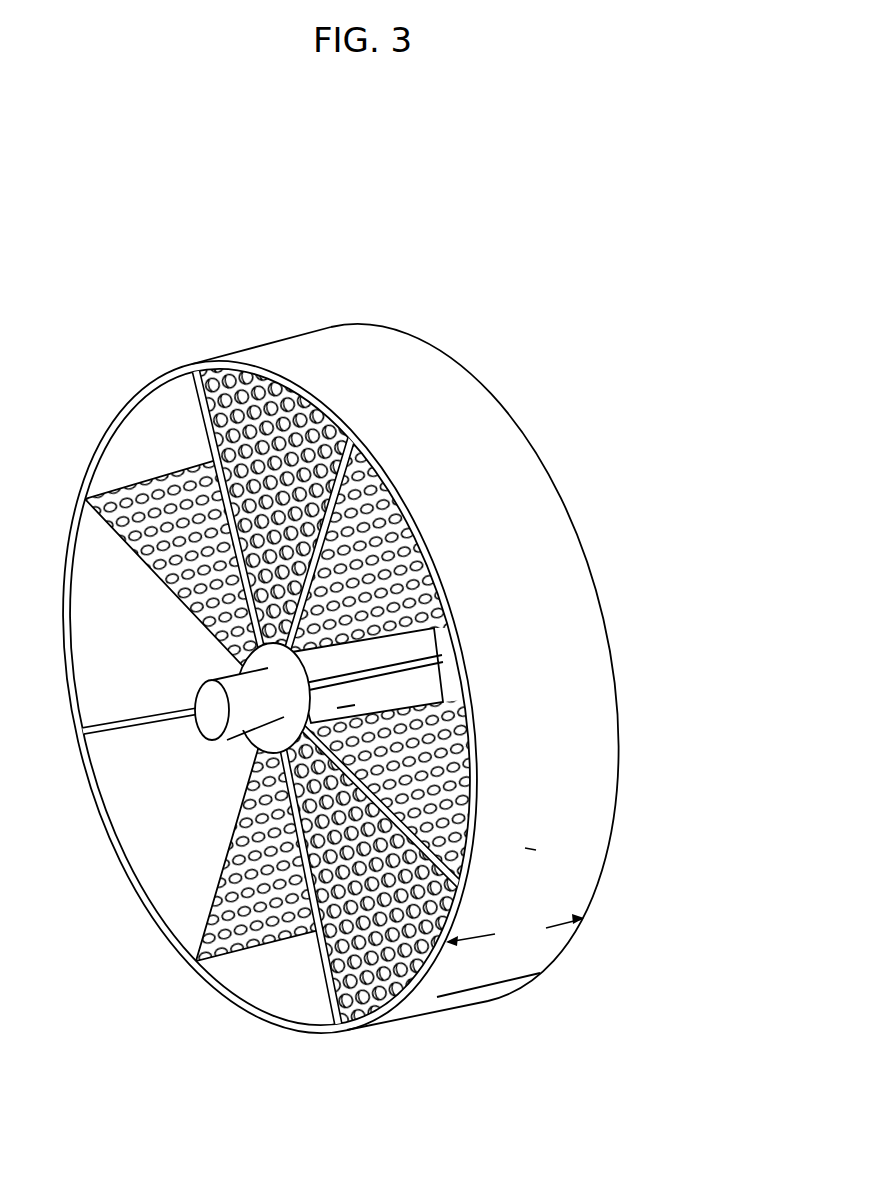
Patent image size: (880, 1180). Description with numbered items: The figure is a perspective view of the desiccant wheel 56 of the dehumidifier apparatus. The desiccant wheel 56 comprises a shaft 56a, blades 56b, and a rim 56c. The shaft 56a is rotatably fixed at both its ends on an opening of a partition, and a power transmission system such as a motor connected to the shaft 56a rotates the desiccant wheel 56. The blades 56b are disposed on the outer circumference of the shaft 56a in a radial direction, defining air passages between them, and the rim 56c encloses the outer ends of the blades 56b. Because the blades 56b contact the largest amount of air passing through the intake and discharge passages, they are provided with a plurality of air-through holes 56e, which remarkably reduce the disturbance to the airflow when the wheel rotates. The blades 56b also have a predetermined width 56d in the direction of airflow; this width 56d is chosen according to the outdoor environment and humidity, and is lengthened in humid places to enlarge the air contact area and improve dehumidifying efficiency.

The desiccant wheel 56 is at (626, 348).
The shaft 56a is at (217, 717).
The blades 56b is at (420, 990).
The rim 56c is at (593, 740).
The predetermined width 56d is at (515, 898).
The air-through holes 56e is at (214, 957).